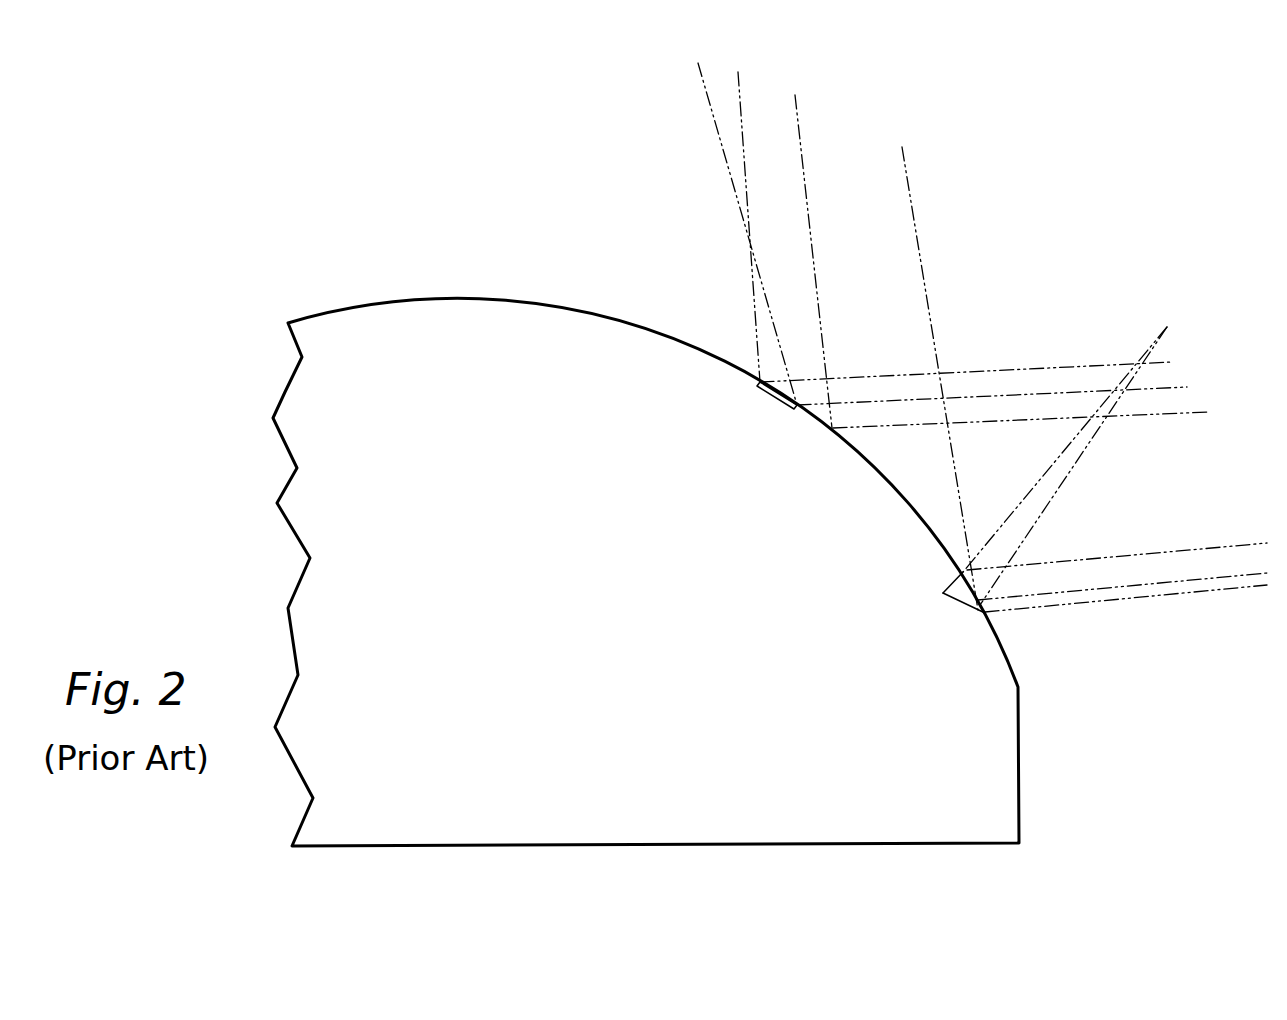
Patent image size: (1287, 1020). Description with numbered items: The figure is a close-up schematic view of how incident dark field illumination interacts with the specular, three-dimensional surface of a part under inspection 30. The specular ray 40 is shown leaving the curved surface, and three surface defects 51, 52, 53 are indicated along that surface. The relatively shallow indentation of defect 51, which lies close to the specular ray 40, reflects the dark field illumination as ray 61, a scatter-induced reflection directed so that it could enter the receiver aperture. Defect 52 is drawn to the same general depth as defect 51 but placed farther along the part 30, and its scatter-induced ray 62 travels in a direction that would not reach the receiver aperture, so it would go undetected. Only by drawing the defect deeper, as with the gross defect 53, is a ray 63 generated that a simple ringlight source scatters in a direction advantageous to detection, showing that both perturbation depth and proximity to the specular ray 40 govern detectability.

The part under inspection 30 is at (562, 624).
The specular ray 40 is at (803, 173).
The surface defect 51 is at (775, 397).
The surface defect 52 is at (943, 593).
The surface defect 53 is at (960, 608).
The ray 61 is at (742, 105).
The ray 62 is at (1082, 452).
The ray 63 is at (917, 242).